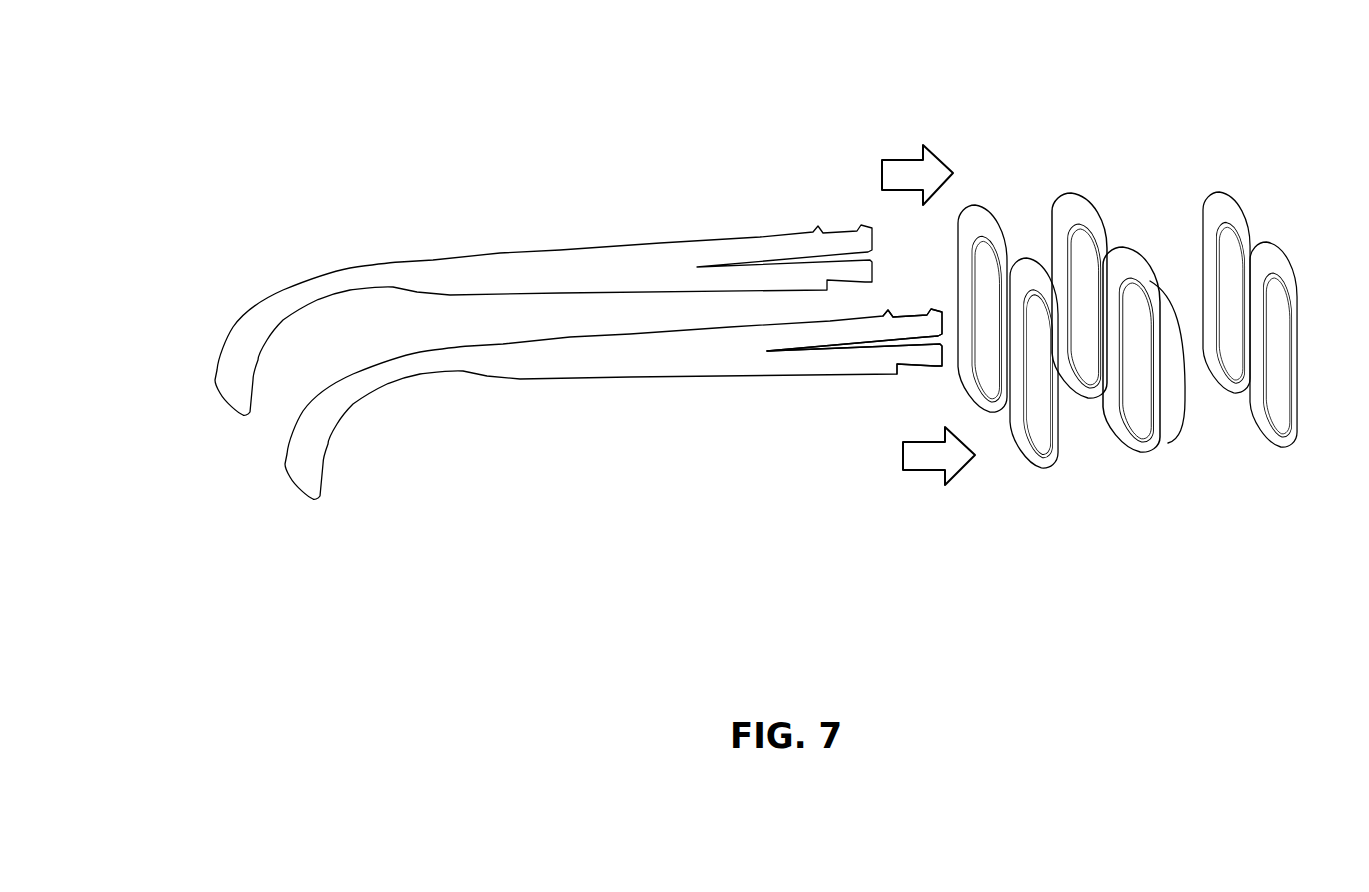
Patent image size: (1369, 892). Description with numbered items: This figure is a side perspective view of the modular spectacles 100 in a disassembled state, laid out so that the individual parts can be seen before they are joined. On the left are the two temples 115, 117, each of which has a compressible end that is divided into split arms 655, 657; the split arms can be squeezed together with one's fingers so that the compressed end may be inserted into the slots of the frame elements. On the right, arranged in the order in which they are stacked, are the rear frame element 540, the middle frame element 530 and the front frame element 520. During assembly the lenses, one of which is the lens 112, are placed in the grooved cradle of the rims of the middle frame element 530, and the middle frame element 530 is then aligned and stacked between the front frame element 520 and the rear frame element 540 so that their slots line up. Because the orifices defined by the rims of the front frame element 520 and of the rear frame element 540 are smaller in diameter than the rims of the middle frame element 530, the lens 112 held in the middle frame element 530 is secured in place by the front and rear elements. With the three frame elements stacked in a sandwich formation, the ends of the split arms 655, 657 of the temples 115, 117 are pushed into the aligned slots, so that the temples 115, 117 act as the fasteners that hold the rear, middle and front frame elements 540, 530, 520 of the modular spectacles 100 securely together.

The modular spectacles 100 is at (309, 172).
The temple 115 is at (231, 323).
The temple 117 is at (281, 447).
The split arm 655 is at (858, 317).
The split arm 657 is at (864, 372).
The rear frame element 540 is at (1027, 460).
The middle frame element 530 is at (1138, 462).
The lens 112 is at (1173, 437).
The front frame element 520 is at (1283, 457).